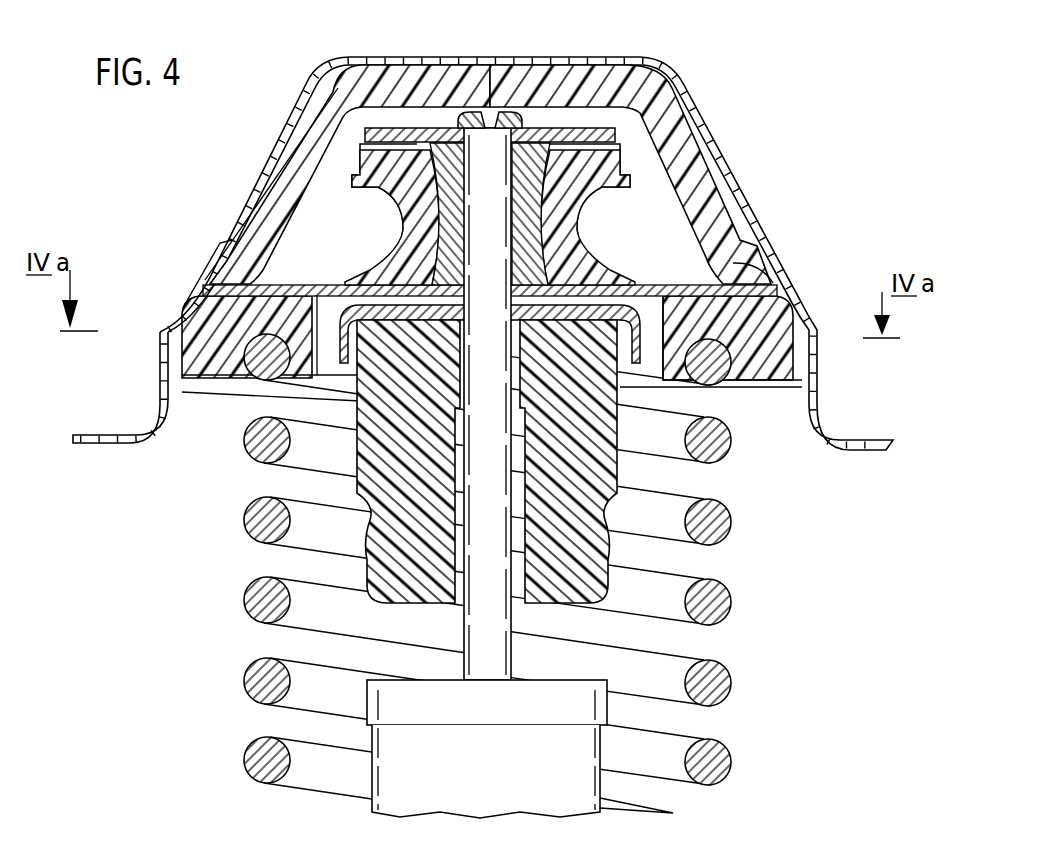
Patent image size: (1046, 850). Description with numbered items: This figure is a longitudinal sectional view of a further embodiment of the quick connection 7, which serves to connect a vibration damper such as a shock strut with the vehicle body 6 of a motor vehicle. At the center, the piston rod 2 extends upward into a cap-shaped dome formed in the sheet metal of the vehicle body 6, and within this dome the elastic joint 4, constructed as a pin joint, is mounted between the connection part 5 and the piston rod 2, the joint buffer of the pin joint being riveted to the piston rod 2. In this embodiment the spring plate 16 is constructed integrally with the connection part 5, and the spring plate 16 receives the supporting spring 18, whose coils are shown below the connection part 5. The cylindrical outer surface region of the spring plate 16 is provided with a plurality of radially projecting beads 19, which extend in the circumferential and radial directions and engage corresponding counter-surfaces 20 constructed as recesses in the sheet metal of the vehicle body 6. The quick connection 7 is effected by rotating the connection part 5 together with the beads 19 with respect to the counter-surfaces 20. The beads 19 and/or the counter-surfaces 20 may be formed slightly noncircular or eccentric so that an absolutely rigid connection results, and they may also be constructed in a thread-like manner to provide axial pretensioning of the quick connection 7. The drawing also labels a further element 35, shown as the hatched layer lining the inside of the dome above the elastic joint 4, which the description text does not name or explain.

The piston rod 2 is at (500, 651).
The elastic joint 4 is at (346, 166).
The connection part 5 is at (587, 240).
The vehicle body 6 is at (850, 437).
The quick connection 7 is at (823, 317).
The spring plate 16 is at (760, 262).
The supporting spring 18 is at (717, 523).
The beads 19 is at (163, 307).
The counter-surfaces 20 is at (163, 347).
The elastomer cover layer 35 is at (687, 157).